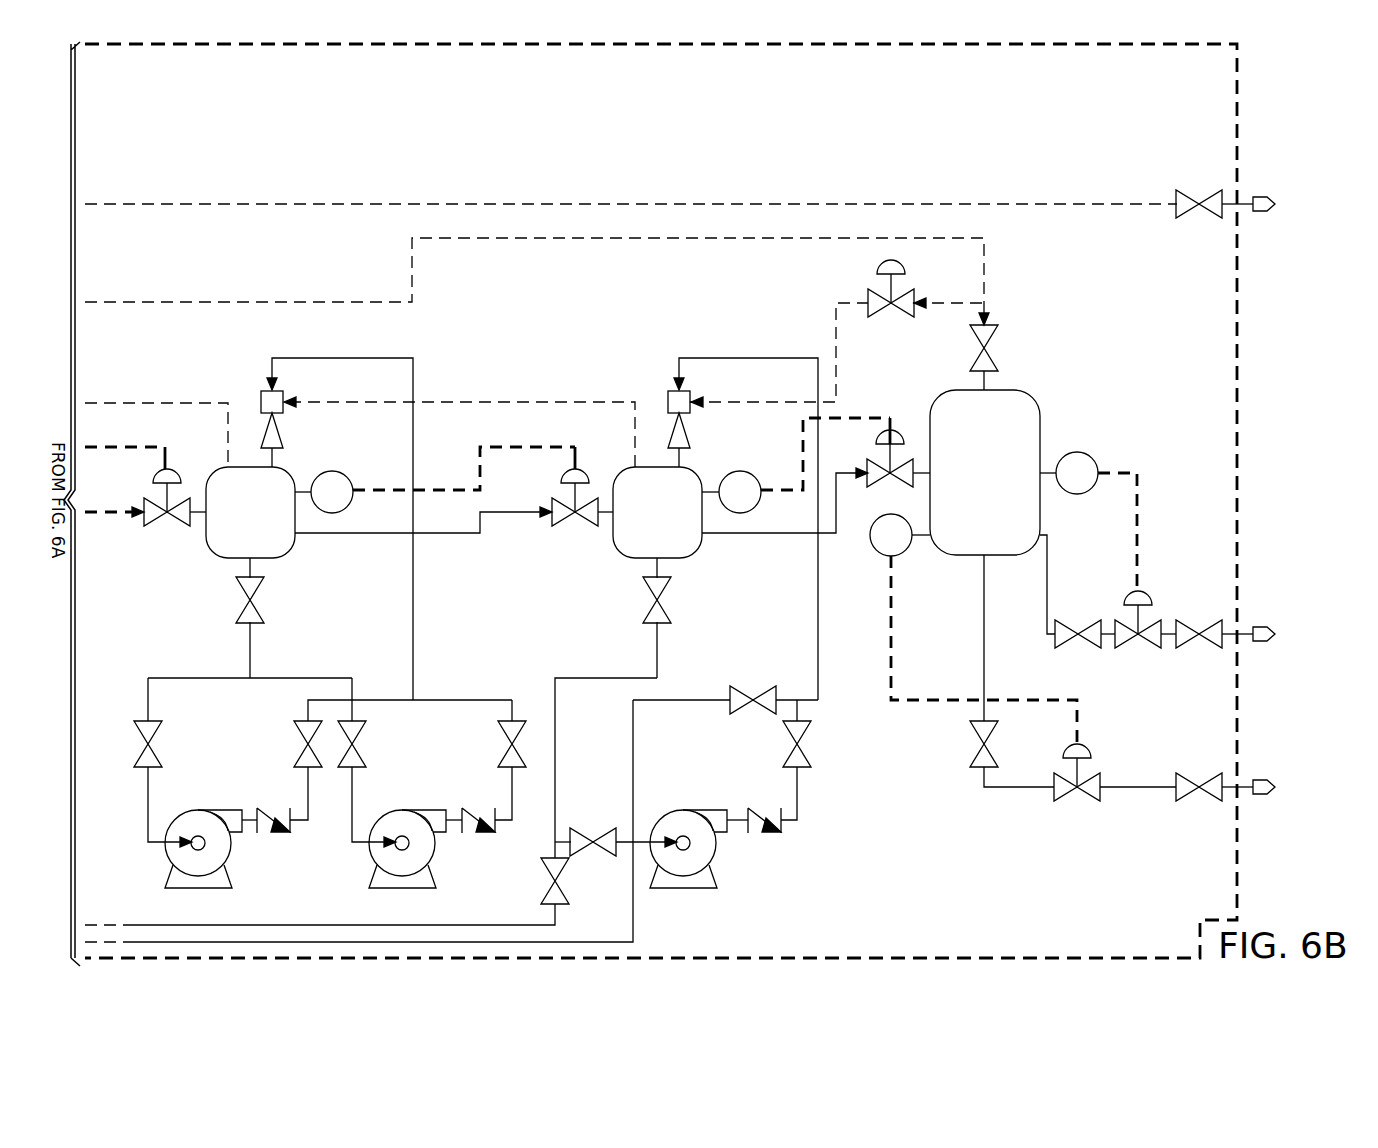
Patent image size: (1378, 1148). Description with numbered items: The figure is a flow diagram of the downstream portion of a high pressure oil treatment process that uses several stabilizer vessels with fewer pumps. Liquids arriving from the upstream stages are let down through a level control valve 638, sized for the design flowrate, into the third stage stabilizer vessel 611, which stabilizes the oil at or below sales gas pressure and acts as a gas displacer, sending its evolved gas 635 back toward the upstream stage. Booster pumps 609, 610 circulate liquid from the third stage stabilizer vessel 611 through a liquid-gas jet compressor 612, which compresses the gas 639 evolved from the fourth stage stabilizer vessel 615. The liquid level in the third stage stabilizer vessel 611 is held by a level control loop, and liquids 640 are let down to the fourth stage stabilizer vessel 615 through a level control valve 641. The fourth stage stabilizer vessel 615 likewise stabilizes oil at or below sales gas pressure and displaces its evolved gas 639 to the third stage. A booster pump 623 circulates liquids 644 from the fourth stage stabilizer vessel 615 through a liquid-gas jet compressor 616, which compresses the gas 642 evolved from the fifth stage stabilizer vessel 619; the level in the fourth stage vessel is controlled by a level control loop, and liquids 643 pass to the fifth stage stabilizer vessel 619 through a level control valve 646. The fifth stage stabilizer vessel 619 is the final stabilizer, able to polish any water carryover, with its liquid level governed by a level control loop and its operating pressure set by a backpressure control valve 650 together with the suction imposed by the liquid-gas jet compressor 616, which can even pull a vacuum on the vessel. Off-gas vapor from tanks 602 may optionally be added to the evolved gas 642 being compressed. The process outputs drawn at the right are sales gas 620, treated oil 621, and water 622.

The vapor from tanks 602 is at (412, 272).
The booster pump 609 is at (232, 848).
The booster pump 610 is at (436, 848).
The third stage stabilizer vessel 611 is at (220, 556).
The liquid-gas jet compressor 612 is at (258, 395).
The fourth stage stabilizer vessel 615 is at (630, 556).
The liquid-gas jet compressor 616 is at (665, 393).
The fifth stage stabilizer vessel 619 is at (1040, 440).
The sales gas 620 is at (1258, 198).
The treated oil 621 is at (1255, 630).
The water 622 is at (1258, 793).
The booster pump 623 is at (717, 848).
The evolved gas 635 is at (165, 402).
The level control valve 638 is at (163, 527).
The evolved gas 639 is at (466, 400).
The liquids 640 is at (353, 537).
The level control valve 641 is at (570, 527).
The evolved gas 642 is at (835, 338).
The liquids 643 is at (765, 537).
The liquids 644 is at (660, 568).
The level control valve 646 is at (880, 487).
The backpressure control valve 650 is at (898, 318).